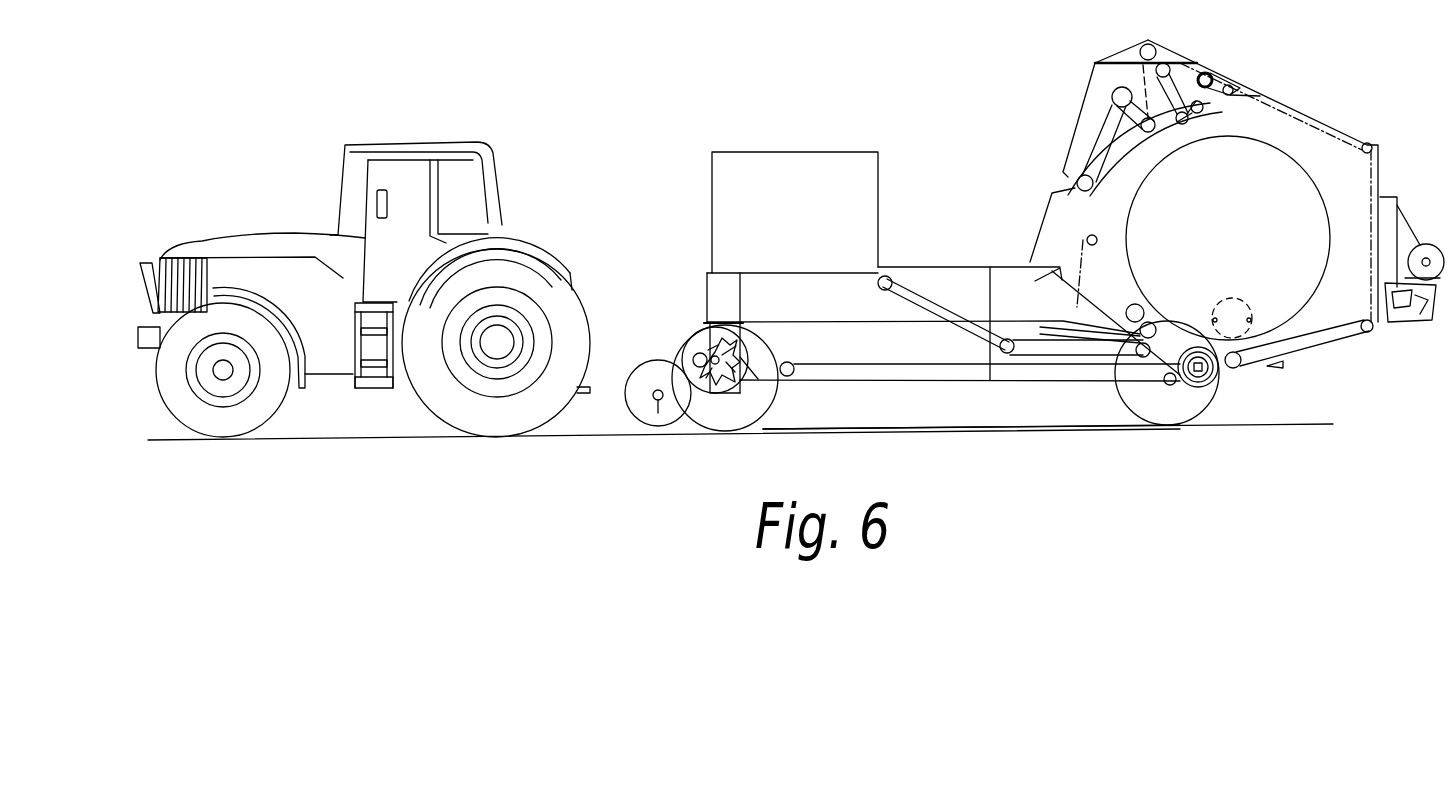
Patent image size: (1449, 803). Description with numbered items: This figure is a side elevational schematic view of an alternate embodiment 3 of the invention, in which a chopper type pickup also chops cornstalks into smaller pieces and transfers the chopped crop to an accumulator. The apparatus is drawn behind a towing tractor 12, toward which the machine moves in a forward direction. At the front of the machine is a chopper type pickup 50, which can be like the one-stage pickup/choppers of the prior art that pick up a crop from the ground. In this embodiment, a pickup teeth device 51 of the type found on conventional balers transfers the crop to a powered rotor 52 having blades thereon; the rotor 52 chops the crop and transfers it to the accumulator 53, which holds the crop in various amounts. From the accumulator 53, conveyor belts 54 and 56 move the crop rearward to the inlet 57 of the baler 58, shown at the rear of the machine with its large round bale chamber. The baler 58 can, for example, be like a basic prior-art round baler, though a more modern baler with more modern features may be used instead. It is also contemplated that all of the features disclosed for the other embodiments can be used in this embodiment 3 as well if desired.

The alternate embodiment 3 is at (766, 80).
The towing tractor 12 is at (523, 230).
The chopper type pickup 50 is at (647, 370).
The pickup rotor 51 is at (688, 347).
The powered rotor 52 is at (743, 364).
The accumulator 53 is at (833, 160).
The conveyor belt 54 is at (902, 373).
The conveyor belt 56 is at (947, 307).
The inlet 57 is at (1175, 337).
The baler 58 is at (1270, 137).